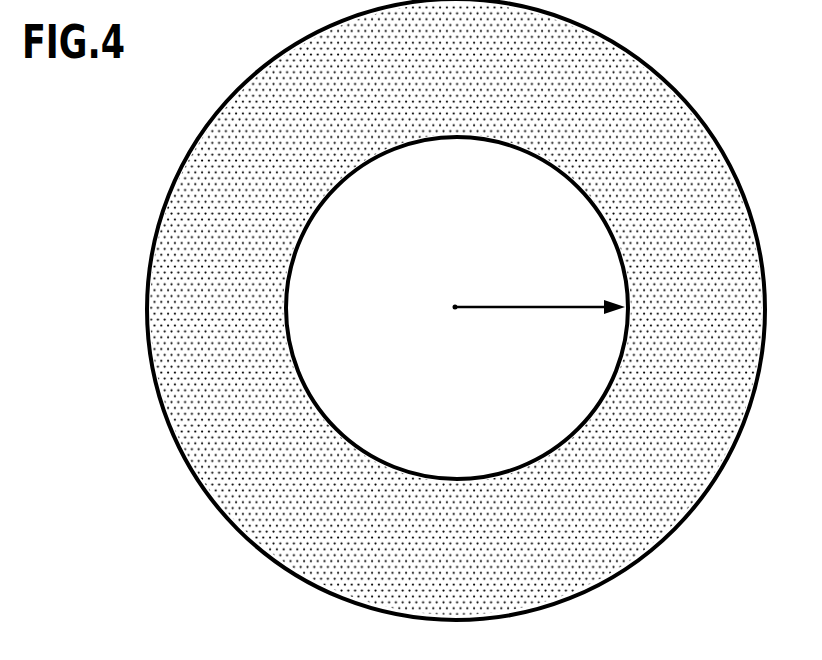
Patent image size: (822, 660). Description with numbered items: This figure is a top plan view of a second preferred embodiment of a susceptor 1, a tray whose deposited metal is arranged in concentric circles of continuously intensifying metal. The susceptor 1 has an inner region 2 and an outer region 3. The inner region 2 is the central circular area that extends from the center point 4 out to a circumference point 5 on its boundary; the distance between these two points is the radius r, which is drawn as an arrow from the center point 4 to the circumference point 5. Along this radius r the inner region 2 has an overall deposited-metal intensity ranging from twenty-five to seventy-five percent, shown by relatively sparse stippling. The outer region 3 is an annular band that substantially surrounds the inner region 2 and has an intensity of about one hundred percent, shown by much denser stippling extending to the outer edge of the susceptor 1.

The susceptor 1 is at (721, 112).
The inner region 2 is at (460, 197).
The outer region 3 is at (460, 93).
The center point 4 is at (455, 307).
The circumference point 5 is at (620, 315).